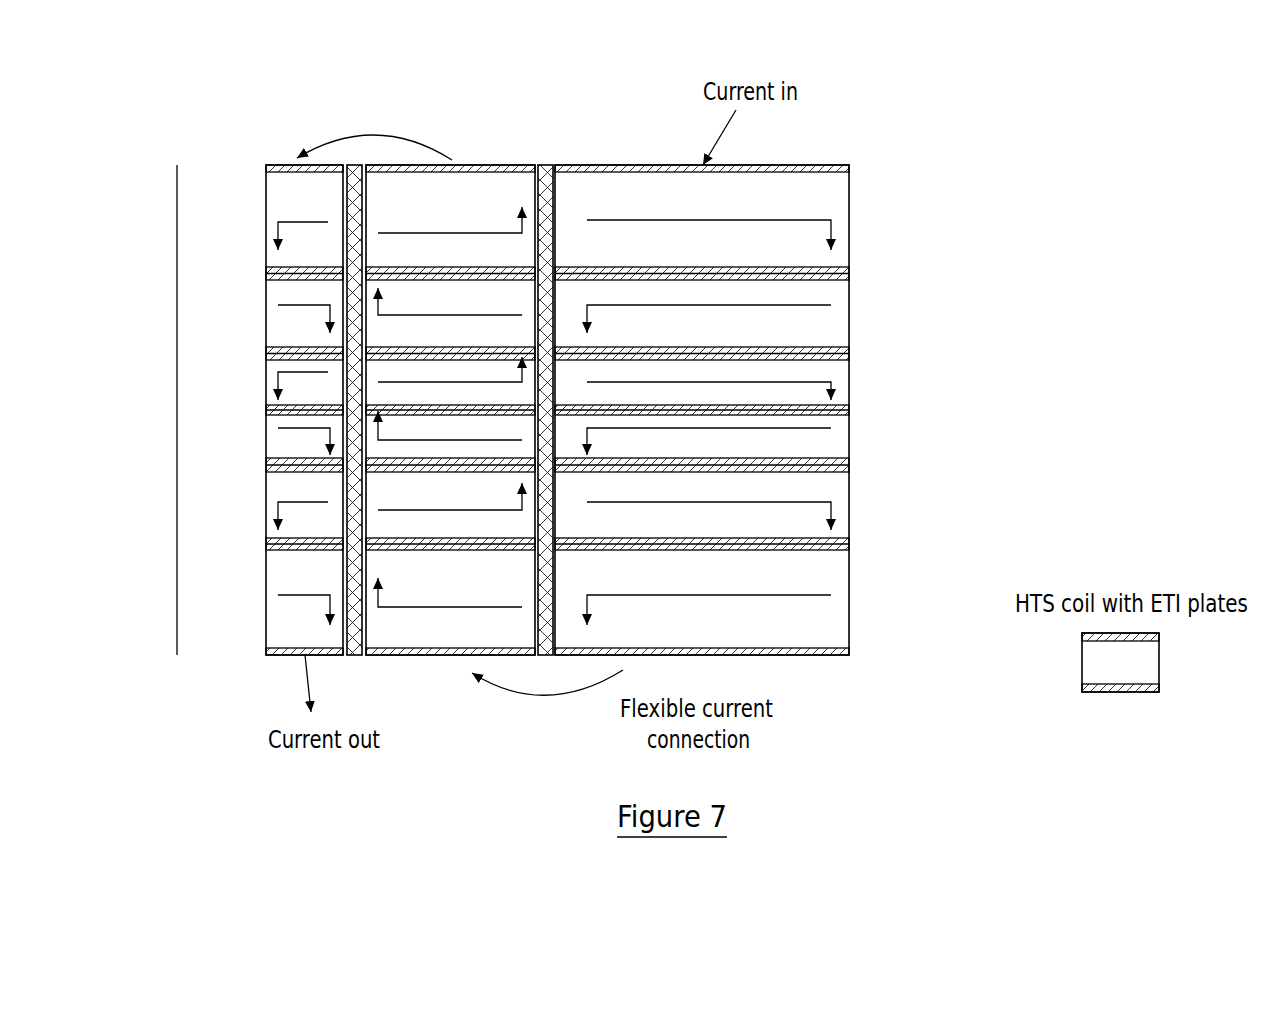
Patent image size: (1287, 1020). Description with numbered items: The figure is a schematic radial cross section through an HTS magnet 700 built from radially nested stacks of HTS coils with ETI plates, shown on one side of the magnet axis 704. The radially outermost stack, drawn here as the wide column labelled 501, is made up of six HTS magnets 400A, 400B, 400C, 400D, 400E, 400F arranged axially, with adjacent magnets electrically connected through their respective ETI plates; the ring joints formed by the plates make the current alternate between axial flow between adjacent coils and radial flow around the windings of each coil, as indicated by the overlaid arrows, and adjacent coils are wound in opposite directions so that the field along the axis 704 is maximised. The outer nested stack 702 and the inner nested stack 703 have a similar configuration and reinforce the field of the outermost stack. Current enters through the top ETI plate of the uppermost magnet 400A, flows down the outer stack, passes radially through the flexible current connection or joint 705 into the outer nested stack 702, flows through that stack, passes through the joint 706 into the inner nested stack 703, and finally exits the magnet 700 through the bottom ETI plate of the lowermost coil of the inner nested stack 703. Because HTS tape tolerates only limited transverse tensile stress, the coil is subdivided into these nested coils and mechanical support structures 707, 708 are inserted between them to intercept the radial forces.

The HTS magnet 700 is at (599, 388).
The outer nested stack 702 is at (470, 140).
The inner nested stack 703 is at (250, 675).
The axis 704 is at (174, 378).
The radial joint 705 is at (548, 698).
The radial joint 706 is at (374, 132).
The mechanical support 707 is at (543, 342).
The mechanical support 708 is at (355, 429).
The outer HTS coil with ETI plates 501 is at (796, 680).
The HTS magnet 400A is at (850, 222).
The HTS magnet 400B is at (850, 319).
The HTS magnet 400C is at (850, 386).
The HTS magnet 400D is at (850, 442).
The HTS magnet 400E is at (850, 510).
The HTS magnet 400F is at (850, 602).